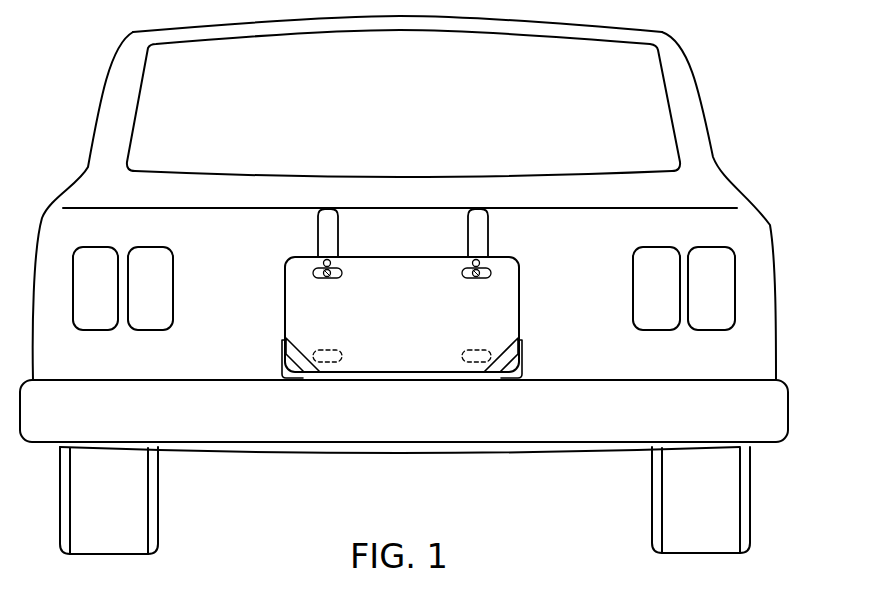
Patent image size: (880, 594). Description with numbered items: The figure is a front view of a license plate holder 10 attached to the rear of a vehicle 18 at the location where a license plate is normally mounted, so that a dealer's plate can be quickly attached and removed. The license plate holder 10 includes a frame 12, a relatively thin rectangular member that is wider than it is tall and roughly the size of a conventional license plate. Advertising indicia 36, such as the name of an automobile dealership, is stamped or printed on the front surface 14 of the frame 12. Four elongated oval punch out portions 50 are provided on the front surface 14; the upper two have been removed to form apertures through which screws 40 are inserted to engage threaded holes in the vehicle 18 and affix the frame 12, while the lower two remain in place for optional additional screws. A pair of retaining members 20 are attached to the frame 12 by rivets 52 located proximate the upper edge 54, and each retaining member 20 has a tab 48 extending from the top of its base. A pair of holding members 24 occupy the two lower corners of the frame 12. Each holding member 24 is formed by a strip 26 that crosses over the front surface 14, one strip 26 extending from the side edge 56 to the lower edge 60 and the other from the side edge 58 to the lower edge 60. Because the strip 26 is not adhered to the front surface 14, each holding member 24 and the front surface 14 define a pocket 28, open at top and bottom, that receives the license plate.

The license plate holder 10 is at (567, 238).
The frame 12 is at (291, 284).
The front surface 14 is at (401, 359).
The vehicle 18 is at (58, 216).
The retaining member 20 is at (325, 241).
The holding member 24 is at (284, 375).
The strip 26 is at (282, 345).
The pocket 28 is at (300, 350).
The advertising indicia 36 is at (371, 303).
The screw 40 is at (310, 271).
The tab 48 is at (333, 213).
The punch out portion 50 is at (322, 280).
The rivet 52 is at (331, 261).
The upper edge 54 is at (436, 256).
The side edge 56 is at (286, 316).
The side edge 58 is at (521, 316).
The lower edge 60 is at (423, 375).